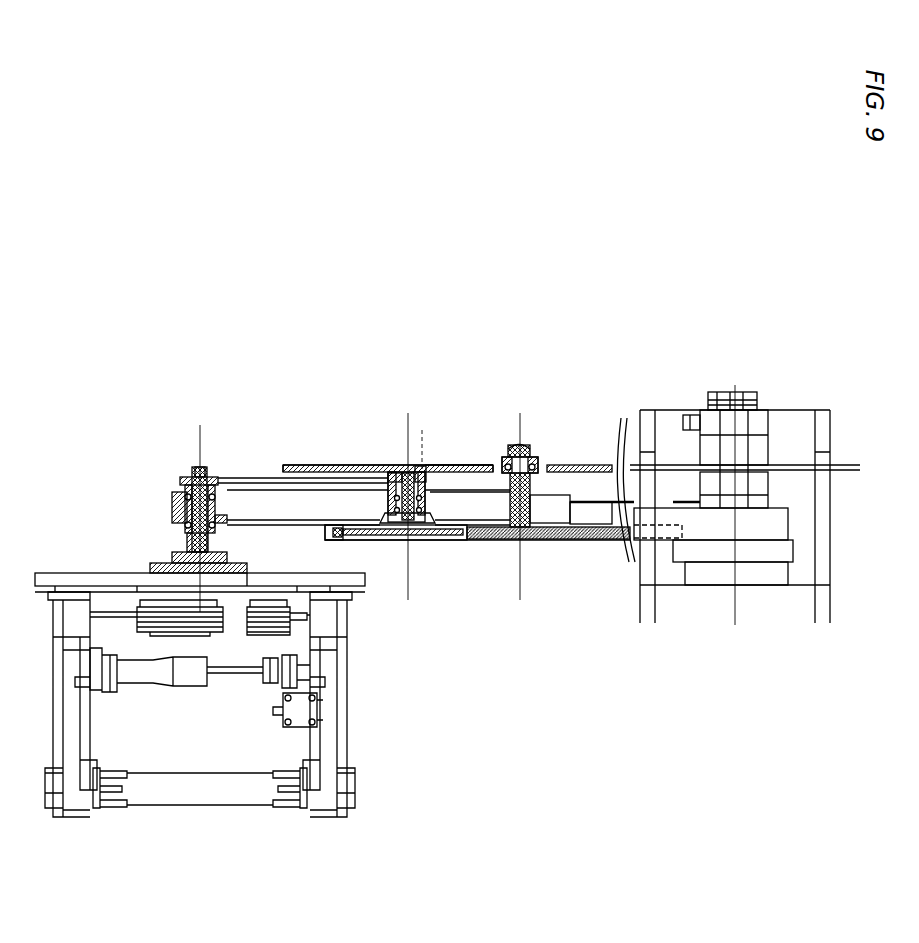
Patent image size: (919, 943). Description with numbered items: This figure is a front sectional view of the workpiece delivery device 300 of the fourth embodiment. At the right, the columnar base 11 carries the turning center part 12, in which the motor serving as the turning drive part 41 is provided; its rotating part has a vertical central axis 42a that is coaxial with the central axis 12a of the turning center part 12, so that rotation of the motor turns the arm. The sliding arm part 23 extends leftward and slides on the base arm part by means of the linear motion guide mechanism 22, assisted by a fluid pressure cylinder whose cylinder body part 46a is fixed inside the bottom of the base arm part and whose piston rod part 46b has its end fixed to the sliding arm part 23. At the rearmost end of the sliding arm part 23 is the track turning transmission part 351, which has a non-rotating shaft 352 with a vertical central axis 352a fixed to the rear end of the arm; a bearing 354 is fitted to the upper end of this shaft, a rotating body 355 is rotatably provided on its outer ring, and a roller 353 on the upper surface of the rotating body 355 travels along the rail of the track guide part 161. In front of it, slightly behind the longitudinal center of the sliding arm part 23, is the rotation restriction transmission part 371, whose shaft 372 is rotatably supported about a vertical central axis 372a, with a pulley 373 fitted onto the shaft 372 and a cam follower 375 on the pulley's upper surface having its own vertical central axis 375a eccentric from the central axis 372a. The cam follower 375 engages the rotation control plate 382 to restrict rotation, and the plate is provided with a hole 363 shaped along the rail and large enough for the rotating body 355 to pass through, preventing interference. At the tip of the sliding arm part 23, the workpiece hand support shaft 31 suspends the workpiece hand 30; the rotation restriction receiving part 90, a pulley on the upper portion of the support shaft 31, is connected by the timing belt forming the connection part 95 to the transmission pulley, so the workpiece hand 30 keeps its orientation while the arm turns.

The workpiece hand 30 is at (138, 553).
The workpiece hand support shaft 31 is at (176, 497).
The rotation restriction receiving part 90 is at (184, 478).
The connection part 95 is at (250, 479).
The sliding arm part 23 is at (272, 517).
The rotation restriction transmission part 371 is at (460, 327).
The rotation control plate 382 is at (285, 466).
The pulley 373 is at (376, 464).
The shaft 372 is at (405, 466).
The central axis 372a is at (424, 466).
The hole 363 is at (494, 464).
The cam follower 375 is at (427, 475).
The central axis 375a is at (433, 465).
The piston rod part 46b is at (386, 540).
The linear motion guide mechanism 22 is at (453, 540).
The cylinder body part 46a is at (506, 542).
The roller 353 is at (504, 452).
The rotating body 355 is at (538, 461).
The track guide part 161 is at (532, 450).
The bearing 354 is at (533, 478).
The non-rotating shaft 352 is at (531, 510).
The track turning transmission part 351 is at (635, 494).
The central axis 352a is at (522, 553).
The workpiece delivery device 300 is at (829, 369).
The base 11 is at (816, 589).
The turning drive part 41 is at (764, 413).
The central axis 42a is at (736, 390).
The central axis 12a is at (737, 608).
The turning center part 12 is at (808, 520).